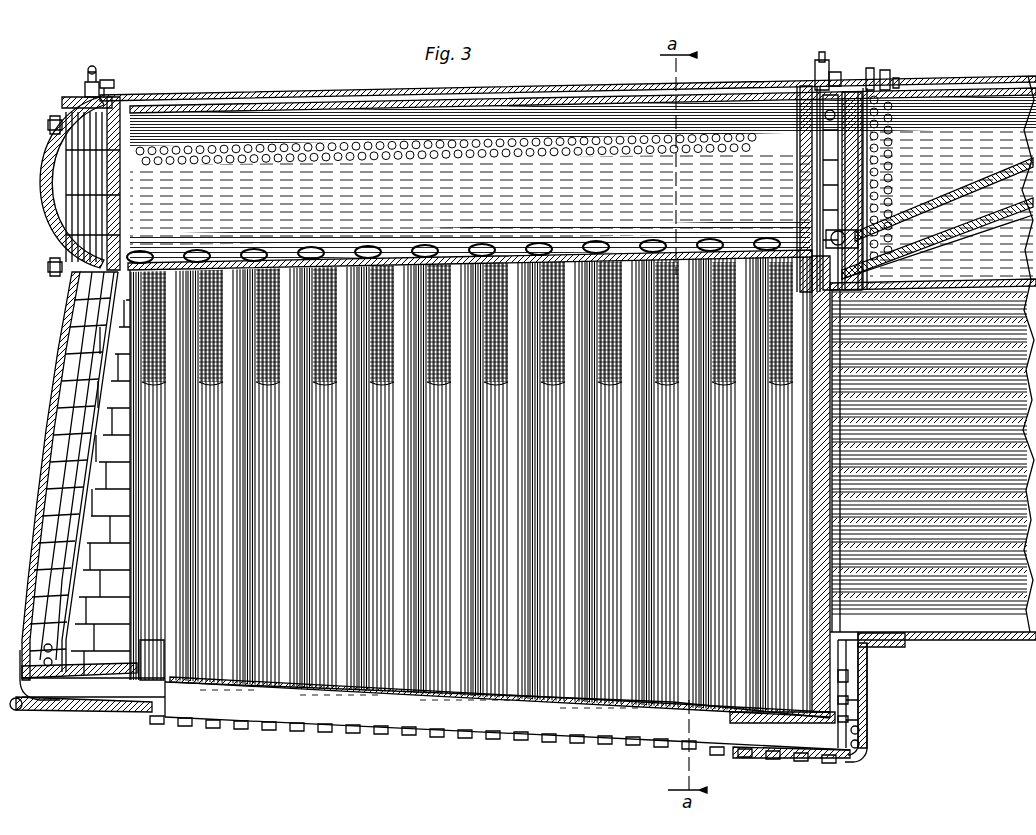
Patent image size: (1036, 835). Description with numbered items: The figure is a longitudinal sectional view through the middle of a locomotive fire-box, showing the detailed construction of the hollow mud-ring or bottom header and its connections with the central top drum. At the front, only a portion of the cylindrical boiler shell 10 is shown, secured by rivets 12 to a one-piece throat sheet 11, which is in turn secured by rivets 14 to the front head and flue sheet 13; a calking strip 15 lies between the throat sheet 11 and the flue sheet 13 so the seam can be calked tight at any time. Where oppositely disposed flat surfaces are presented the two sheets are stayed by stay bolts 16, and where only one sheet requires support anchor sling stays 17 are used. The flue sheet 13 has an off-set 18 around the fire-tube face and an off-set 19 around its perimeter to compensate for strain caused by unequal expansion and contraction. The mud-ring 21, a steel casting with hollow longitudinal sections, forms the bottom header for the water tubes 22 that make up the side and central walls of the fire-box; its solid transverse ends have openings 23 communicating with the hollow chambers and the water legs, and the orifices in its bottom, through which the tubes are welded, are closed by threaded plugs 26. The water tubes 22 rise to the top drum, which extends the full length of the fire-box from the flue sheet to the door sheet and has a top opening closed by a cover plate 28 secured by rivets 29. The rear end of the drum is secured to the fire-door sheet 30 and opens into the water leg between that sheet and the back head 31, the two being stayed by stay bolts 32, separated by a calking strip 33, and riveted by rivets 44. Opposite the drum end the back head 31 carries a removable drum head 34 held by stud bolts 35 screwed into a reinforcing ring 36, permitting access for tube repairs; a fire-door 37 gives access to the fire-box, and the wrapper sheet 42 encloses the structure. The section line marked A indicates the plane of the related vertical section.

The boiler shell 10 is at (950, 82).
The throat sheet 11 is at (874, 80).
The rivets 12 is at (894, 80).
The front head and flue sheet 13 is at (820, 62).
The rivets 14 is at (840, 74).
The calking strip 15 is at (824, 54).
The stay bolts 16 is at (852, 672).
The anchor sling stays 17 is at (948, 198).
The off-set 18 is at (885, 265).
The off-set 19 is at (806, 84).
The mud-ring 21 is at (410, 722).
The water tubes 22 is at (575, 685).
The openings 23 is at (848, 748).
The threaded plugs 26 is at (212, 728).
The cover plates 28 is at (252, 106).
The rivets 29 is at (244, 160).
The fire-door sheet 30 is at (98, 318).
The back head 31 is at (62, 346).
The stay bolts 32 is at (66, 382).
The calking strip 33 is at (92, 68).
The drum heads 34 is at (48, 185).
The stud bolts 35 is at (48, 124).
The reinforcing rings 36 is at (66, 110).
The fire-doors 37 is at (52, 492).
The wrapper sheet 42 is at (190, 97).
The rivets 44 is at (108, 90).
The furnace chamber A is at (6, 614).